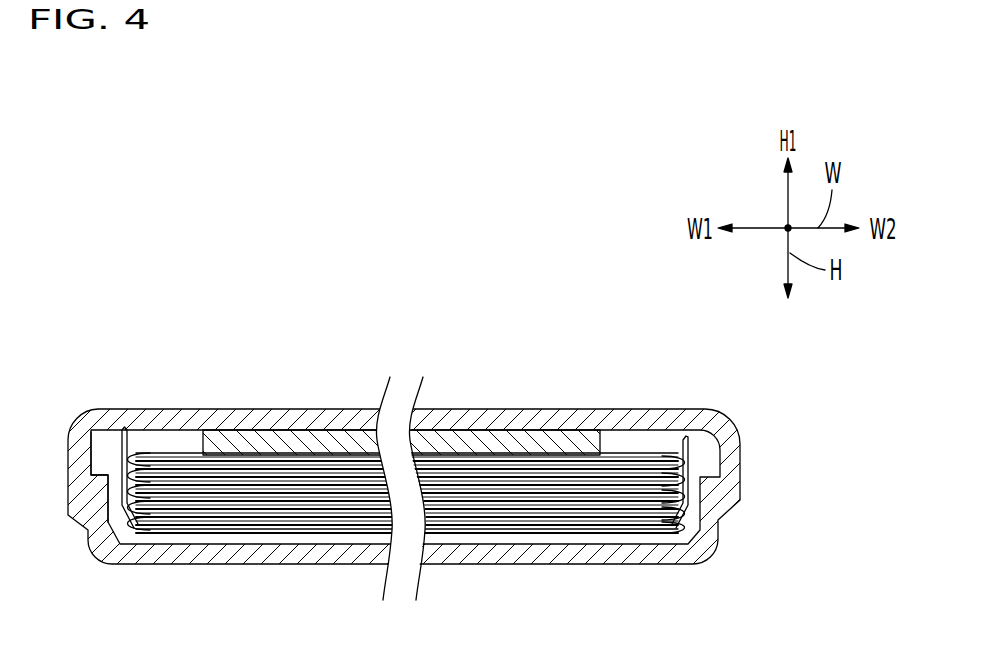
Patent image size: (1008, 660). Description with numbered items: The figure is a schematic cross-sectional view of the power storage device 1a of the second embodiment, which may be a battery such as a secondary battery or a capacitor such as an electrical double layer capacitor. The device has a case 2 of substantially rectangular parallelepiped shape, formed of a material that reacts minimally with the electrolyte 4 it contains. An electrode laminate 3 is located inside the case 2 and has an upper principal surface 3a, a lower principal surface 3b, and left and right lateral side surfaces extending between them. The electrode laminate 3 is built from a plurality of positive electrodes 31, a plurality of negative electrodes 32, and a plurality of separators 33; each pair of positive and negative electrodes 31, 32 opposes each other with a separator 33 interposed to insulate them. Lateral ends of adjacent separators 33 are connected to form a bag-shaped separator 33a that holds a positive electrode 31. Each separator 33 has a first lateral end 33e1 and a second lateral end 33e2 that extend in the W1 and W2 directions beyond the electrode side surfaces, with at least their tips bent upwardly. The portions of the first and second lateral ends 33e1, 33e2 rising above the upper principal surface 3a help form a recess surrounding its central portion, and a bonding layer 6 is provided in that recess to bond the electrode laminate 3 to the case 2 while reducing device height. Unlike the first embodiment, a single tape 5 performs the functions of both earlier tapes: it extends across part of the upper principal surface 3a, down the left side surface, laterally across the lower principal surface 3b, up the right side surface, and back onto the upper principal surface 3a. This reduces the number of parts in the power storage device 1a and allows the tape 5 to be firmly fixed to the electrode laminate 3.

The power storage device 1a is at (686, 362).
The case 2 is at (748, 455).
The electrode laminate 3 is at (472, 540).
The upper principal surface 3a is at (550, 452).
The lower principal surface 3b is at (290, 548).
The positive electrode 31 is at (198, 462).
The negative electrode 32 is at (198, 523).
The separator 33 is at (152, 522).
The bag-shaped separator 33a is at (522, 540).
The first lateral end 33e1 is at (127, 522).
The second lateral end 33e2 is at (678, 520).
The electrolyte 4 is at (110, 440).
The tape 5 is at (150, 440).
The bonding layer 6 is at (316, 410).